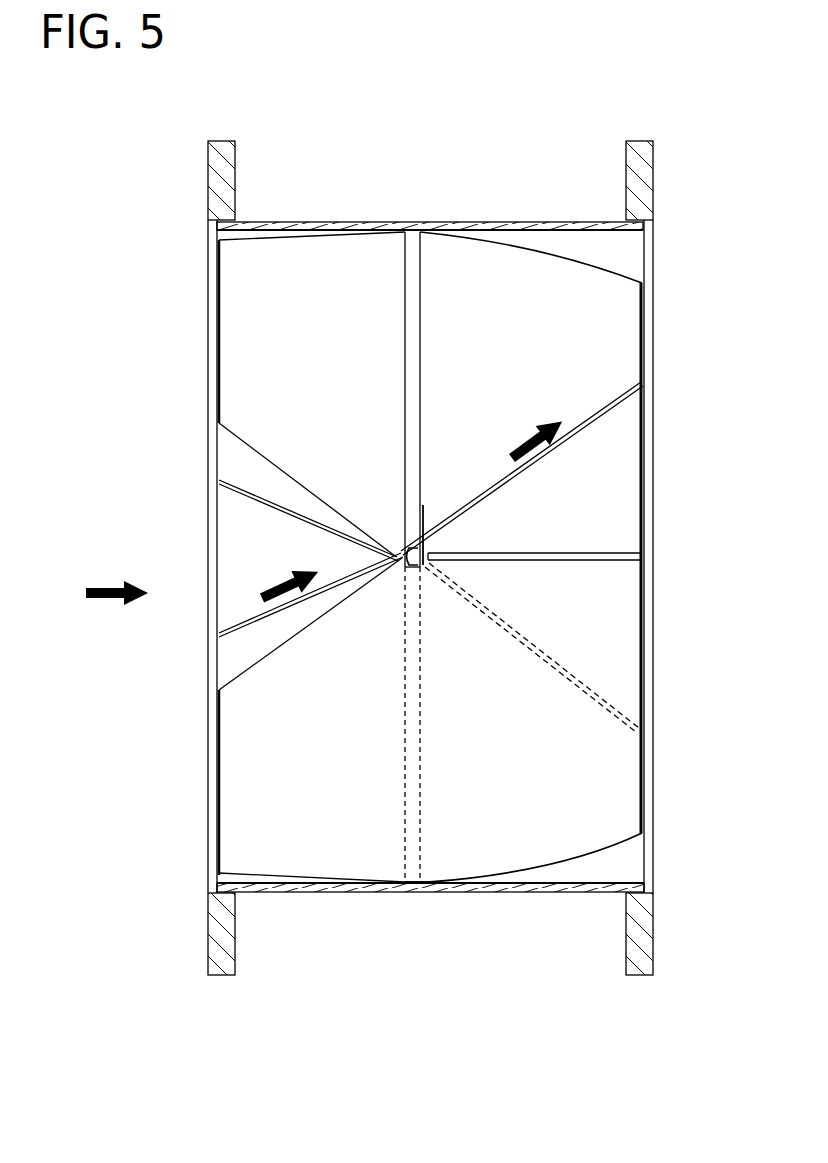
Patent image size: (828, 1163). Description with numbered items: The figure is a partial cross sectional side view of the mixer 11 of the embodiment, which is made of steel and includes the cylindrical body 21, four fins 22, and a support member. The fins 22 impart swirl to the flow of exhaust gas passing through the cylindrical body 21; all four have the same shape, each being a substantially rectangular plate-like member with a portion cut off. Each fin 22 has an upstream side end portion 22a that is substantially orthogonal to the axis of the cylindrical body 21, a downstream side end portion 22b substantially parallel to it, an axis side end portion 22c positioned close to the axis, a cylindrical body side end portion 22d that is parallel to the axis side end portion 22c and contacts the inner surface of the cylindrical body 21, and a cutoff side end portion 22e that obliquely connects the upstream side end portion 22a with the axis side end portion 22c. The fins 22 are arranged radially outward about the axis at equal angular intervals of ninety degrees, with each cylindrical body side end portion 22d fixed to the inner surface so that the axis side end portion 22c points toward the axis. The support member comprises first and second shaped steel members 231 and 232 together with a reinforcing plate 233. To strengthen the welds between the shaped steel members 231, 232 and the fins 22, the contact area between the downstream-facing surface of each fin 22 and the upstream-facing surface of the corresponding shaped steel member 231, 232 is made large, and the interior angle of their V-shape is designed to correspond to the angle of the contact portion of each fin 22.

The mixer 11 is at (176, 148).
The cylindrical body 21 is at (312, 222).
The fin 22 is at (429, 587).
The upstream side end portion 22a is at (207, 777).
The downstream side end portion 22b is at (645, 690).
The axis side end portion 22c is at (536, 553).
The cylindrical body side end portion 22d is at (517, 880).
The cutoff side end portion 22e is at (273, 624).
The first shaped steel member 231 is at (408, 570).
The second shaped steel member 232 is at (405, 285).
The reinforcing plate 233 is at (424, 507).